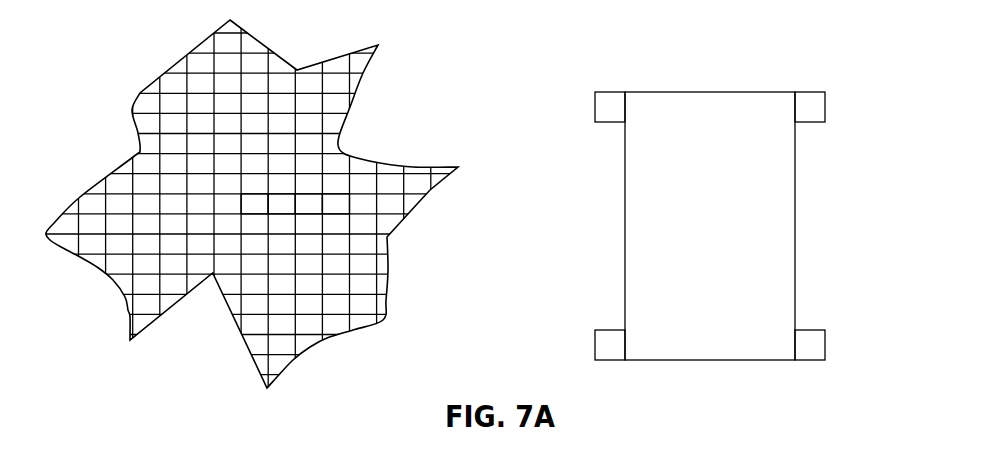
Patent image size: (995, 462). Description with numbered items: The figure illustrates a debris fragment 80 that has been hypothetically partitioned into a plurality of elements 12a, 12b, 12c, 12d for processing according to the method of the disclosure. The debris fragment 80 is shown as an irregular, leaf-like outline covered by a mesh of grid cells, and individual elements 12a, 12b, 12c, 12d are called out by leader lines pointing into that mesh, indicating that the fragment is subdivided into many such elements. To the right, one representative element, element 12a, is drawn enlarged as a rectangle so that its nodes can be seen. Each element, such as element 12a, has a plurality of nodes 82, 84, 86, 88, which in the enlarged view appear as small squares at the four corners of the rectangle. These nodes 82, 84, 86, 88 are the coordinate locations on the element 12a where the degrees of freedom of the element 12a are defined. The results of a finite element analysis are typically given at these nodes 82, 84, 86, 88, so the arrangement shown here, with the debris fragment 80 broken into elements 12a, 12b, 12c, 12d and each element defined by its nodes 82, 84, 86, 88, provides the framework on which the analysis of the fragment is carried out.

The debris fragment 80 is at (124, 66).
The element 12a is at (253, 205).
The element 12b is at (278, 205).
The element 12c is at (305, 205).
The element 12d is at (328, 207).
The node 82 is at (617, 92).
The node 84 is at (608, 362).
The node 86 is at (823, 90).
The node 88 is at (810, 360).